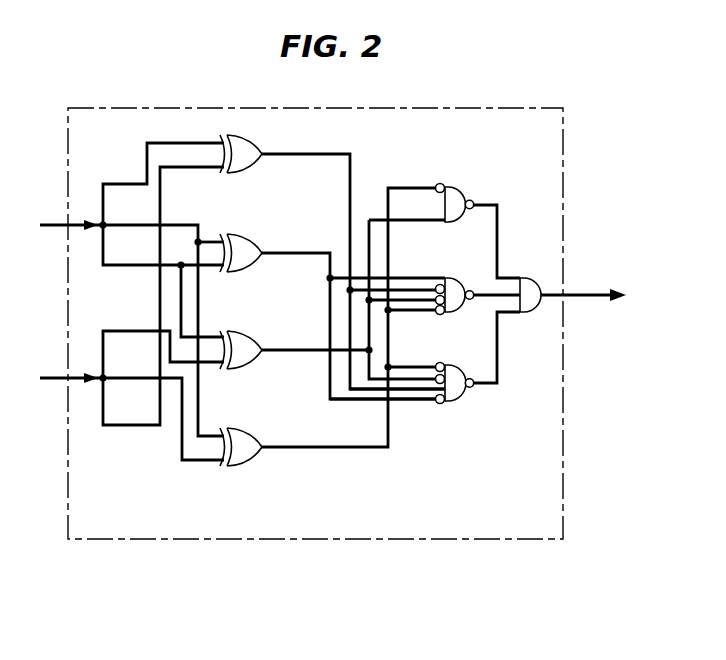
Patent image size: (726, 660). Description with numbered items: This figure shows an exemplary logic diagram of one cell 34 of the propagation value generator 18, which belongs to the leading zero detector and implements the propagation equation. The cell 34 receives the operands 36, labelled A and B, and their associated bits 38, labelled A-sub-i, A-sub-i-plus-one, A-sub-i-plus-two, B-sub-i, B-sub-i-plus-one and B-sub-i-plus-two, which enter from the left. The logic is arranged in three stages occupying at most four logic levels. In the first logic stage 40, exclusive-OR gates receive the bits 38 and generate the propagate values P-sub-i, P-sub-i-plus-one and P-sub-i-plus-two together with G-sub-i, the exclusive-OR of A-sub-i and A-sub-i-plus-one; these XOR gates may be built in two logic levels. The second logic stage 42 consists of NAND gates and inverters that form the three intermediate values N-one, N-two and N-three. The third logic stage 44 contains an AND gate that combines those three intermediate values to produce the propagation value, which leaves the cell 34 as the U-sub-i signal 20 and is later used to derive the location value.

The propagation value generator 18 is at (331, 357).
The U_i signal 20 is at (568, 328).
The cell 34 is at (495, 540).
The operands 36 is at (51, 255).
The bits 38 is at (139, 478).
The first logic stage 40 is at (242, 478).
The second logic stage 42 is at (452, 426).
The third logic stage 44 is at (537, 333).